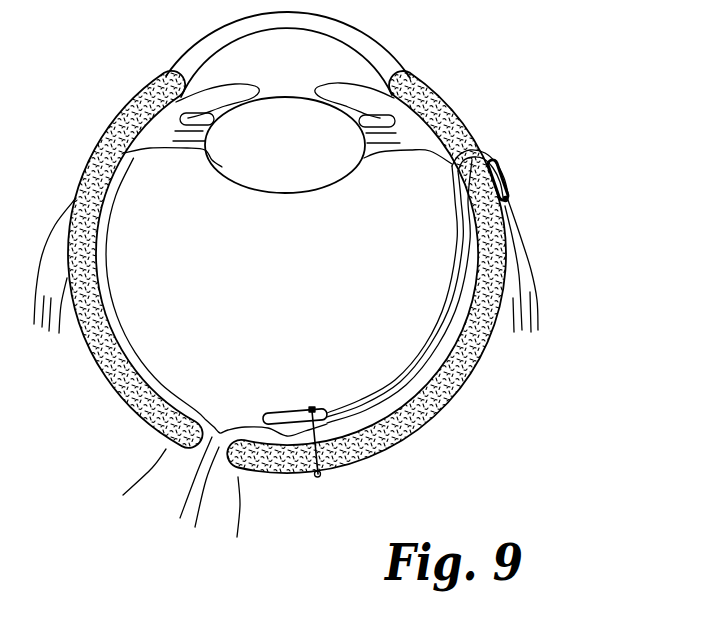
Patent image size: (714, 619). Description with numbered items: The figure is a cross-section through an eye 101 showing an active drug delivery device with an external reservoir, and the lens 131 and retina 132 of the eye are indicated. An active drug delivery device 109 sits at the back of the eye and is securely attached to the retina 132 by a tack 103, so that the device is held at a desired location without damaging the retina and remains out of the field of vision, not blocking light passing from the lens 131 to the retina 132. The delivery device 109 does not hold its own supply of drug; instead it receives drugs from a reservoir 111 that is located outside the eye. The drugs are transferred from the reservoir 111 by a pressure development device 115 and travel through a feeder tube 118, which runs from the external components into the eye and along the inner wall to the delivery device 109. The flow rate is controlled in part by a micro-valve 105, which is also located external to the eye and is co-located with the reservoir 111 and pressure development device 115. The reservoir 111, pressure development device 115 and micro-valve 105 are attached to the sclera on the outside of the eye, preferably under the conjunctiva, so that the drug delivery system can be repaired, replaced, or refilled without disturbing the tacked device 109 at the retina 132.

The eye 101 is at (66, 433).
The tack 103 is at (320, 434).
The micro-valve 105 is at (493, 153).
The active drug delivery device 109 is at (286, 412).
The reservoir 111 is at (505, 176).
The pressure development device 115 is at (508, 197).
The feeder tube 118 is at (447, 297).
The lens 131 is at (312, 153).
The retina 132 is at (380, 420).